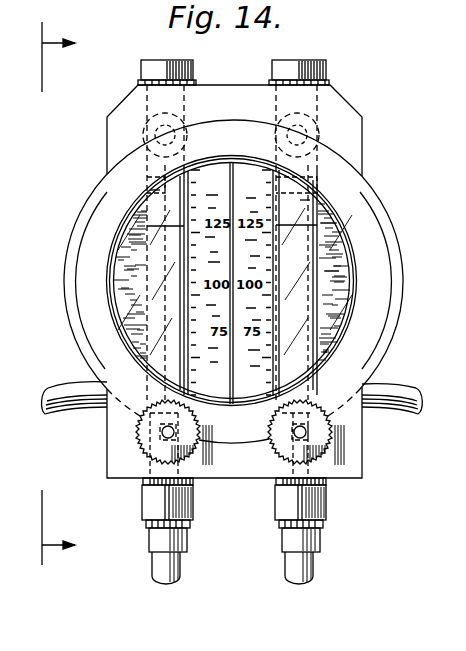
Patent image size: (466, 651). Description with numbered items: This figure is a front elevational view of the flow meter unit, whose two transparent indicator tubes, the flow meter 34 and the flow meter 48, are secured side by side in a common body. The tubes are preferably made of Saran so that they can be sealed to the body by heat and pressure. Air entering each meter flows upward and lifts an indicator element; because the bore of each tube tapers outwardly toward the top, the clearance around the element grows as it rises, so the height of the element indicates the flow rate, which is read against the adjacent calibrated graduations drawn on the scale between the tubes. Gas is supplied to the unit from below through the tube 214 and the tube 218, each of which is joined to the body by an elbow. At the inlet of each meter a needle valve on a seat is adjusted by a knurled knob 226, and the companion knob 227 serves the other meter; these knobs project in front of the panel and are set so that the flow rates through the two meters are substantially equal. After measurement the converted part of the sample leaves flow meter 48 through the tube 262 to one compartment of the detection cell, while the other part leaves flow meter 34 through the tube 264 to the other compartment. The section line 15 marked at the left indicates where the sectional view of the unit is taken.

The section line 15- 15 is at (49, 293).
The flow meter 34 is at (213, 198).
The flow meter 48 is at (301, 217).
The tube 262 is at (76, 416).
The tube 264 is at (372, 414).
The knurled knob 226 is at (150, 458).
The right adjusting knob 227 is at (318, 447).
The tube 218 is at (180, 560).
The tube 214 is at (293, 562).